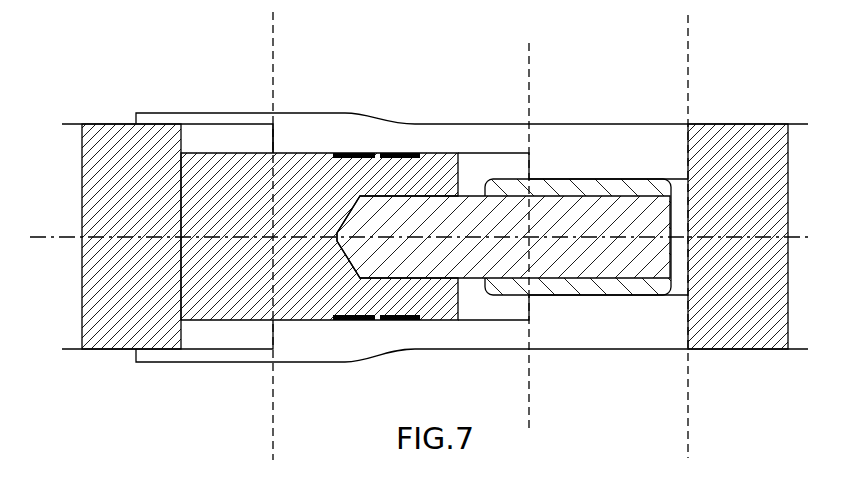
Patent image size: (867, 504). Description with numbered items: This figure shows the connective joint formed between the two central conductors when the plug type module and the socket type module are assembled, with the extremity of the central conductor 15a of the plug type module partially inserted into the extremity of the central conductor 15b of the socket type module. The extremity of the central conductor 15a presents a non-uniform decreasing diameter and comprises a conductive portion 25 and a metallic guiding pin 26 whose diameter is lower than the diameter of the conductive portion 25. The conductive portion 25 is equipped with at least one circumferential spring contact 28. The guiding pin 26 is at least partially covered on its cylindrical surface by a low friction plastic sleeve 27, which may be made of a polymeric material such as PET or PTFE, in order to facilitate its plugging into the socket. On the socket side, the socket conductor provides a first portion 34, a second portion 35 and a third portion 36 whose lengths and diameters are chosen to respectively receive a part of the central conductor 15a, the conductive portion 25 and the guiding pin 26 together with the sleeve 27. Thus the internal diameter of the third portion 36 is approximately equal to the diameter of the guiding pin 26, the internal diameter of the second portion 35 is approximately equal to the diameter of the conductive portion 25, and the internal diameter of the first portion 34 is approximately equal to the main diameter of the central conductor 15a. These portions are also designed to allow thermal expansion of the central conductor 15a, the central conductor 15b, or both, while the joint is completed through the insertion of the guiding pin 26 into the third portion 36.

The central conductor of the plug type module 15a is at (110, 316).
The central conductor of the socket type module 15b is at (733, 317).
The conductive portion 25 is at (232, 297).
The guiding pin 26 is at (587, 262).
The sleeve 27 is at (594, 180).
The circumferential spring contact 28 is at (405, 320).
The first portion 34 is at (217, 118).
The second portion 35 is at (432, 140).
The third portion 36 is at (648, 317).